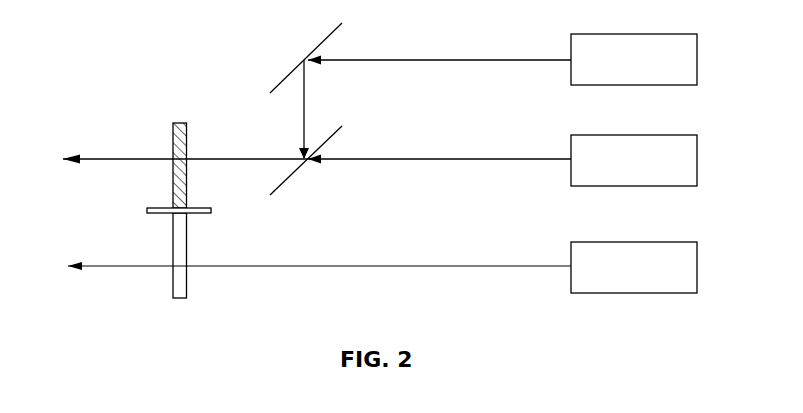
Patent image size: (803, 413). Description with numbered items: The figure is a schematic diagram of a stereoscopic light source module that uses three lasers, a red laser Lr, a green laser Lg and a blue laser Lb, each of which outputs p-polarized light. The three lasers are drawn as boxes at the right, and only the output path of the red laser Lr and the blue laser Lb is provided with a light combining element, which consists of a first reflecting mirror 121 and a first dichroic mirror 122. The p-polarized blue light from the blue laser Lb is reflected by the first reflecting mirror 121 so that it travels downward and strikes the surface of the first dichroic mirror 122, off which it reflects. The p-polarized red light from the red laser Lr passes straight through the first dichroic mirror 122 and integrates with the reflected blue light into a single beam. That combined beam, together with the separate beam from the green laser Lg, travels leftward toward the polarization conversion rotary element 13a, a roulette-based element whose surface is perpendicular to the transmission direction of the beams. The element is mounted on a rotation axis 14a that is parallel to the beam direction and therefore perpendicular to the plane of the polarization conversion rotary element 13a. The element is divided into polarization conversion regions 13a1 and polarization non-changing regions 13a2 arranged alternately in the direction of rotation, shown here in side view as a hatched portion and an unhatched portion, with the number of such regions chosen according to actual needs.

The polarization conversion rotary element 13a is at (164, 168).
The polarization conversion region 13a1 is at (187, 135).
The polarization non-changing region 13a2 is at (187, 243).
The rotation axis 14a is at (193, 207).
The first reflecting mirror 121 is at (306, 58).
The first dichroic mirror 122 is at (306, 153).
The blue laser Lb is at (634, 59).
The red laser Lr is at (634, 160).
The green laser Lg is at (634, 267).